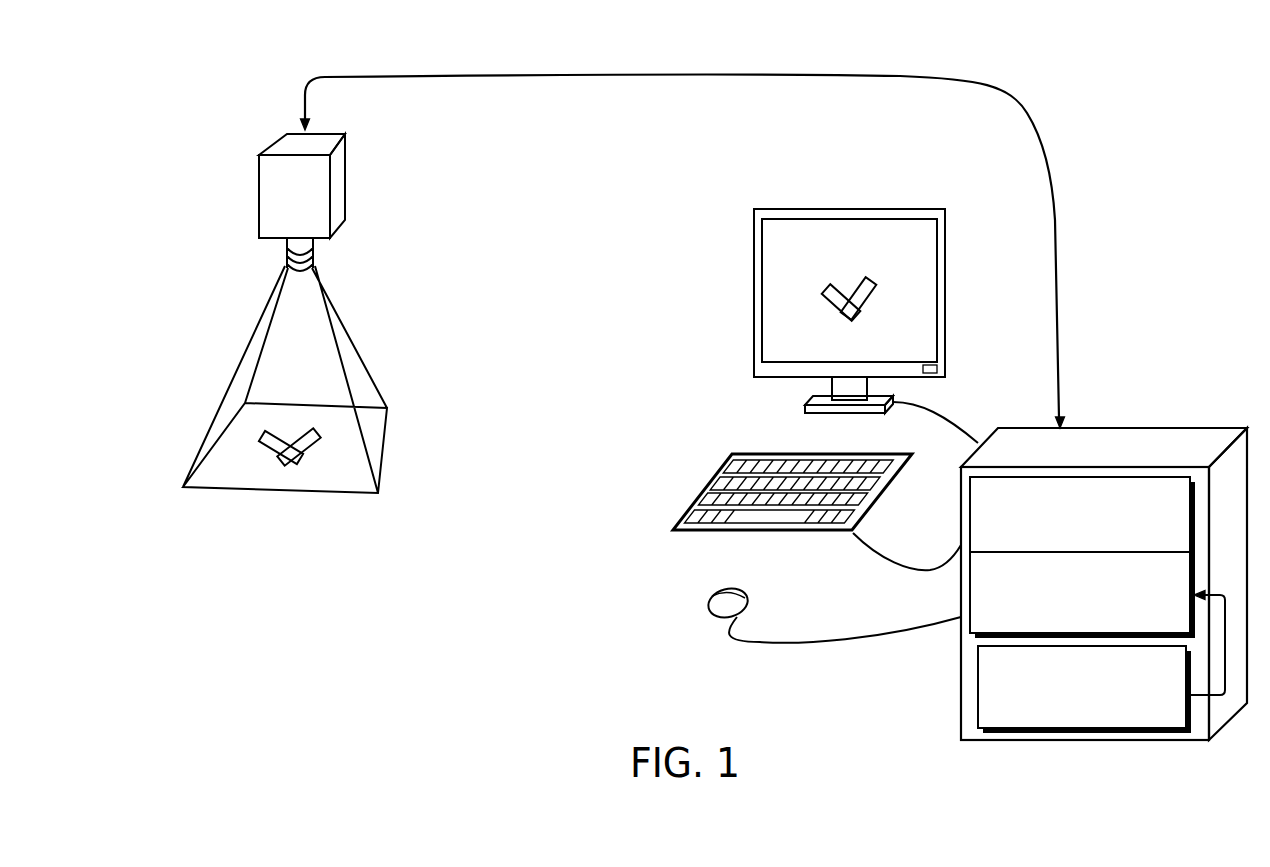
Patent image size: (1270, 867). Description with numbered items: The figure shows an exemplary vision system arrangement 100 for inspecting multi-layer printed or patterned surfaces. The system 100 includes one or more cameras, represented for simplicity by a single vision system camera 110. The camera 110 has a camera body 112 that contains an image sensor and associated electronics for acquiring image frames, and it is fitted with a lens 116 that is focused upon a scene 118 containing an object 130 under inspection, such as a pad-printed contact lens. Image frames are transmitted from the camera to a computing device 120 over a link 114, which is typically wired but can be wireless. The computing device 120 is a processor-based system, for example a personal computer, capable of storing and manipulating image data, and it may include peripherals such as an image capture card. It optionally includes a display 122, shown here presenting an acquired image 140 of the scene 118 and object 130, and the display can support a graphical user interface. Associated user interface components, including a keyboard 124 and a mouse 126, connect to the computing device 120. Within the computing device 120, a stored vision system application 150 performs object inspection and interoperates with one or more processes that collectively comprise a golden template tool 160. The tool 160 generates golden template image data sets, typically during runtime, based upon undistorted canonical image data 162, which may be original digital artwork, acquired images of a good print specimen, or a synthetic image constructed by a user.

The vision system arrangement 100 is at (1010, 68).
The vision system camera 110 is at (345, 186).
The camera body 112 is at (346, 164).
The link 114 is at (620, 78).
The lens 116 is at (315, 250).
The scene 118 is at (325, 379).
The object 130 is at (333, 438).
The display 122 is at (866, 303).
The acquired image 140 is at (874, 268).
The keyboard 124 is at (858, 510).
The mouse 126 is at (741, 592).
The computing device 120 is at (1104, 568).
The vision system application 150 is at (1080, 514).
The golden template tool 160 is at (1080, 592).
The canonical image data 162 is at (1082, 687).